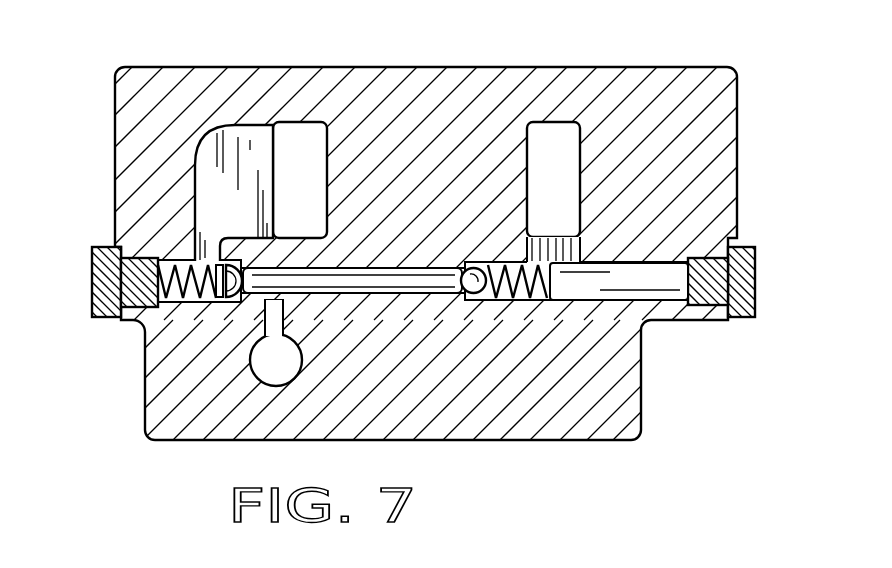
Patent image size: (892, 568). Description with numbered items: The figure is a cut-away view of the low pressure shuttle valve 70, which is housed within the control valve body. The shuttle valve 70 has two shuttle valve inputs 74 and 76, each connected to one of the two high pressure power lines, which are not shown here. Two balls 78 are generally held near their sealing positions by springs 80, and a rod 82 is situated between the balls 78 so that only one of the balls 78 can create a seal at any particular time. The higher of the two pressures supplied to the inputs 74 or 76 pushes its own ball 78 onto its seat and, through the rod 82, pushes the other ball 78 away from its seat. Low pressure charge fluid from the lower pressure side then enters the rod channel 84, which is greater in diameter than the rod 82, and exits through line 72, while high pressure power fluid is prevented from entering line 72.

The low pressure shuttle valve 70 is at (655, 63).
The line 72 is at (252, 361).
The shuttle valve input 74 is at (303, 170).
The shuttle valve input 76 is at (560, 162).
The ball 78 is at (226, 258).
The spring 80 is at (138, 326).
The rod 82 is at (347, 278).
The rod channel 84 is at (328, 298).